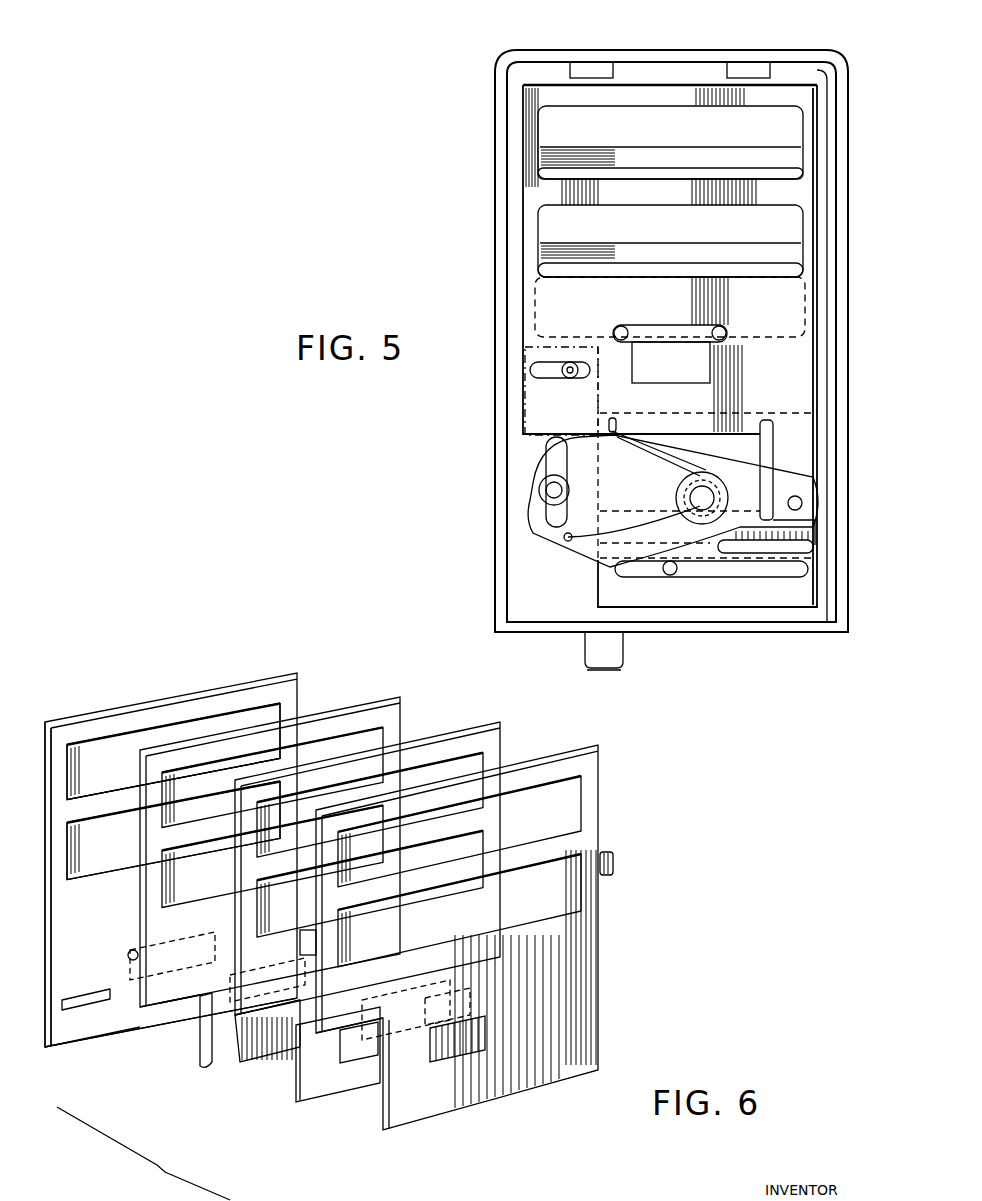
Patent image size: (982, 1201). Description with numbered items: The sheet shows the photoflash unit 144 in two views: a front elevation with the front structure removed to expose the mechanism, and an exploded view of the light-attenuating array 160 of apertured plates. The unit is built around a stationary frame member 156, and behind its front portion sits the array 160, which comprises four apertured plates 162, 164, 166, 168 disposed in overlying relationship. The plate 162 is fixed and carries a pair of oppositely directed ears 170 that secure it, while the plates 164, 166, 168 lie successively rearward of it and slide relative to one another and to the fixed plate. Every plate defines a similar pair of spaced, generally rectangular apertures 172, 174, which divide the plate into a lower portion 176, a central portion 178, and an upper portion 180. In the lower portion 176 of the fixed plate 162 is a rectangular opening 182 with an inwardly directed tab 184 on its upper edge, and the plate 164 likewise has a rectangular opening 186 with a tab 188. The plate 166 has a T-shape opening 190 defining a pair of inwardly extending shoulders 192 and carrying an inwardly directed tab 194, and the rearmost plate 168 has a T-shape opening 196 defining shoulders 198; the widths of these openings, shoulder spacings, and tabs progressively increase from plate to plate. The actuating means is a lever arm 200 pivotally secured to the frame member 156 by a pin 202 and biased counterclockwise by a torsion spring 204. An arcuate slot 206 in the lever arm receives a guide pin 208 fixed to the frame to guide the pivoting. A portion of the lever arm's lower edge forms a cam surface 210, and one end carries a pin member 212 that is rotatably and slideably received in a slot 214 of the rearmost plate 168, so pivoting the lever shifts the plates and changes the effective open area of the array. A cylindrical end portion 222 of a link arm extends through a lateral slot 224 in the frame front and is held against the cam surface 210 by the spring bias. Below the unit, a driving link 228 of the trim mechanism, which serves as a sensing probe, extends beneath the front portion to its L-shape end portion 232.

In FIG. 5, the photoflash unit 144 is at (490, 58).
In FIG. 5, the stationary frame member 156 is at (497, 132).
In FIG. 6, the array of apertured plates 160 is at (143, 1153).
In FIG. 5, the apertured plate 162 is at (787, 297).
In FIG. 6, the apertured plate 162 is at (578, 1002).
In FIG. 6, the apertured plate 164 is at (305, 1090).
In FIG. 6, the apertured plate 166 is at (255, 1052).
In FIG. 6, the apertured plate 168 is at (118, 1012).
In FIG. 6, the ears 170 is at (615, 865).
In FIG. 5, the aperture 172 is at (795, 222).
In FIG. 6, the aperture 172 is at (83, 880).
In FIG. 5, the aperture 174 is at (795, 117).
In FIG. 6, the aperture 174 is at (252, 715).
In FIG. 6, the lower portion 176 is at (65, 1037).
In FIG. 6, the central portion 178 is at (85, 811).
In FIG. 5, the upper portion 180 is at (640, 95).
In FIG. 6, the upper portion 180 is at (172, 706).
In FIG. 6, the rectangular opening 182 is at (460, 1040).
In FIG. 6, the inwardly directed tab 184 is at (440, 1022).
In FIG. 6, the rectangular opening 186 is at (360, 1040).
In FIG. 6, the inwardly directed tab 188 is at (365, 998).
In FIG. 6, the T-shape opening 190 is at (218, 1065).
In FIG. 6, the inwardly extending shoulders 192 is at (248, 1020).
In FIG. 5, the inwardly directed tab 194 is at (670, 342).
In FIG. 6, the inwardly directed tab 194 is at (195, 1030).
In FIG. 5, the T-shape opening 196 is at (682, 365).
In FIG. 6, the T-shape opening 196 is at (128, 948).
In FIG. 5, the inwardly extending shoulders 198 is at (627, 330).
In FIG. 6, the inwardly extending shoulders 198 is at (183, 940).
In FIG. 5, the lever arm 200 is at (656, 498).
In FIG. 5, the pin 202 is at (802, 502).
In FIG. 5, the torsion spring 204 is at (667, 456).
In FIG. 5, the arcuate slot 206 is at (552, 462).
In FIG. 5, the guide pin 208 is at (540, 505).
In FIG. 5, the cam surface 210 is at (745, 553).
In FIG. 5, the pin member 212 is at (568, 380).
In FIG. 5, the slot 214 is at (538, 370).
In FIG. 6, the slot 214 is at (90, 1005).
In FIG. 5, the cylindrical end portion 222 is at (672, 575).
In FIG. 5, the slot 224 is at (795, 575).
In FIG. 5, the driving link 228 is at (615, 652).
In FIG. 5, the end portion 232 is at (618, 672).